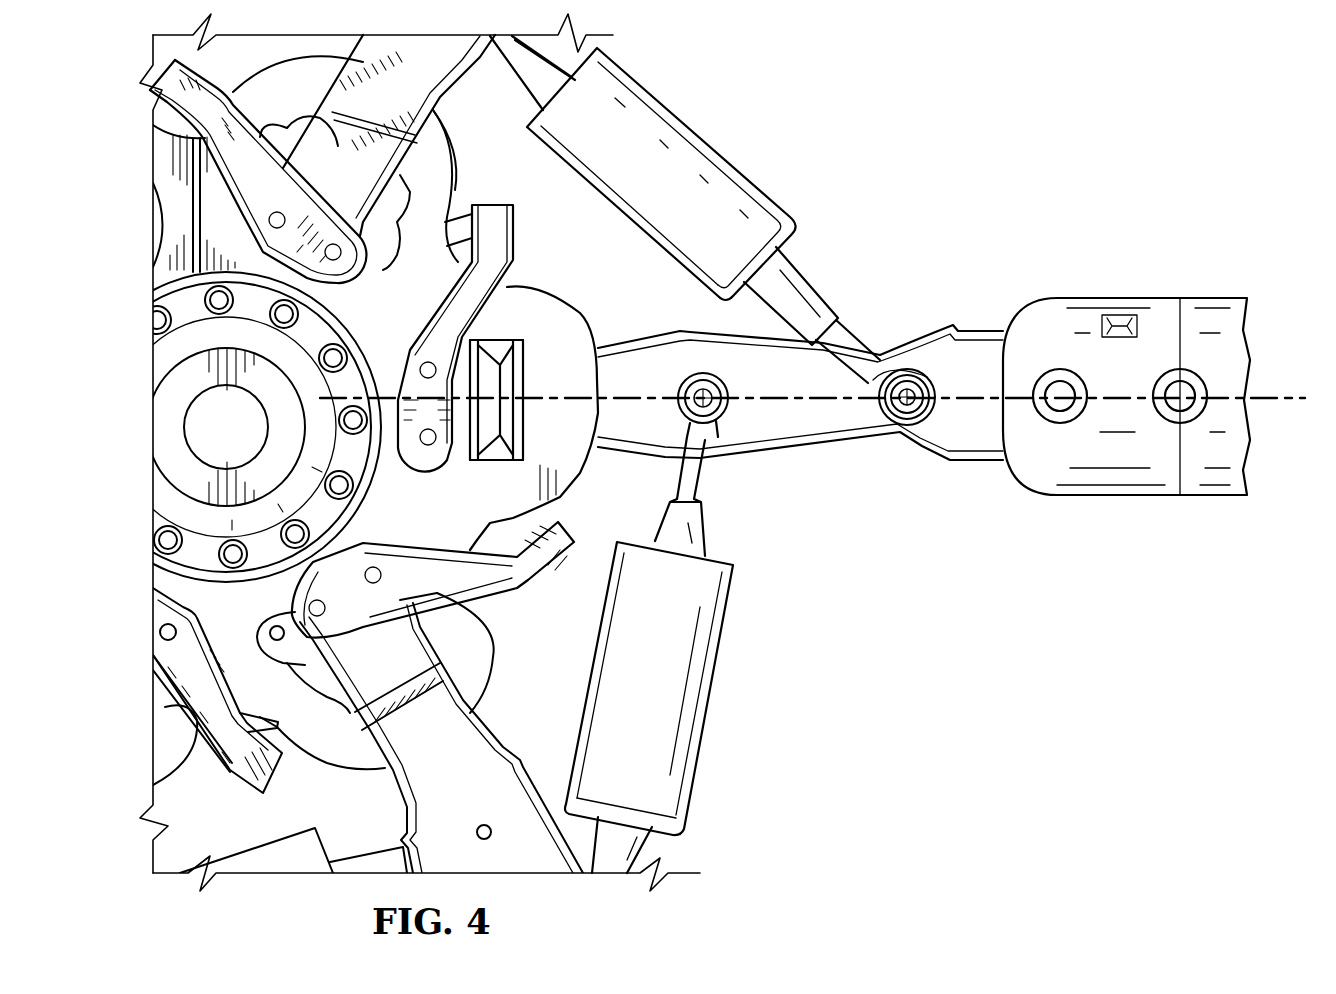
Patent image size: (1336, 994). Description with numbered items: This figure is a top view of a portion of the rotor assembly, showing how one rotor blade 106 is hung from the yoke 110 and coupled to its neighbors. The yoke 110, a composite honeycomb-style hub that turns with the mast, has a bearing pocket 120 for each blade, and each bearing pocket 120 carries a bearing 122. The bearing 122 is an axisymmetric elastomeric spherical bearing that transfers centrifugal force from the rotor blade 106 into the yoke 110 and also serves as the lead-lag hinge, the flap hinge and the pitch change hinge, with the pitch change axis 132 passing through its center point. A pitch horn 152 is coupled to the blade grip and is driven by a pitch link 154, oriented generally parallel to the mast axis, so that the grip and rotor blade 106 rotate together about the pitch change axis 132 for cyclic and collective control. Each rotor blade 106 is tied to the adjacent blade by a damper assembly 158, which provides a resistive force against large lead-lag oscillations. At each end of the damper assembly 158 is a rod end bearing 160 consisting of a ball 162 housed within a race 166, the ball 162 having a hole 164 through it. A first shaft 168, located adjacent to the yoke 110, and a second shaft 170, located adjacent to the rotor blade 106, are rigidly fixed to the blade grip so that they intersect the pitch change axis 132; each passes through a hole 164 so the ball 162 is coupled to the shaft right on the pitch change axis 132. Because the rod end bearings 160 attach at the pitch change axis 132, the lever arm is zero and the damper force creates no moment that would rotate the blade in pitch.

The rotor blade 106 is at (1158, 306).
The yoke 110 is at (160, 162).
The bearing pocket 120 is at (308, 132).
The bearing 122 is at (540, 368).
The pitch change axis 132 is at (1290, 395).
The pitch horn 152 is at (500, 228).
The pitch link 154 is at (460, 228).
The damper assembly 158 is at (686, 122).
The rod end bearing 160 is at (940, 376).
The ball 162 is at (889, 405).
The hole 164 is at (908, 406).
The race 166 is at (880, 383).
The first shaft 168 is at (652, 346).
The second shaft 170 is at (907, 386).